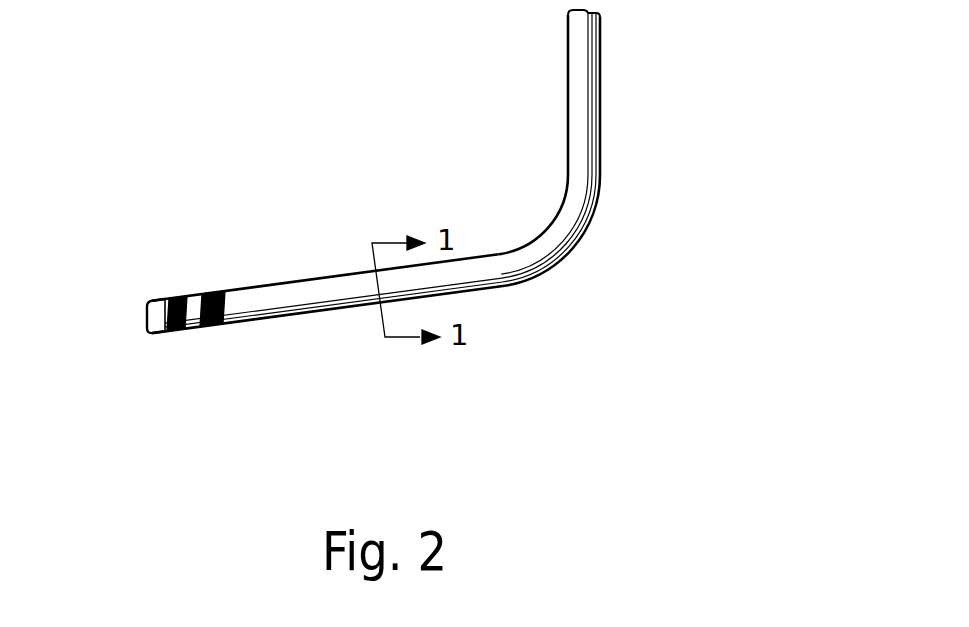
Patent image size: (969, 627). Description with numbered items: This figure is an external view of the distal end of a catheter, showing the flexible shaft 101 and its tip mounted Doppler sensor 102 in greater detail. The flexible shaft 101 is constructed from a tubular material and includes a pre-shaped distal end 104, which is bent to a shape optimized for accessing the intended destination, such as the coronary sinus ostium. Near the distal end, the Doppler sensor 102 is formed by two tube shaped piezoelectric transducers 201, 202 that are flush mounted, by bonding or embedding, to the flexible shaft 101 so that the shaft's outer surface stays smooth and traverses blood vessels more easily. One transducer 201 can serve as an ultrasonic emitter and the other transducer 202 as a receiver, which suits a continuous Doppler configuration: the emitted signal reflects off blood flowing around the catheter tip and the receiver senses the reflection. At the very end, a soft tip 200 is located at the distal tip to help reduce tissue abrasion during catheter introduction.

The flexible shaft 101 is at (635, 91).
The Doppler sensor 102 is at (212, 382).
The pre-shaped distal end 104 is at (546, 345).
The soft tip 200 is at (150, 298).
The ultrasonic transducer 201 is at (172, 297).
The ultrasonic transducer 202 is at (207, 296).